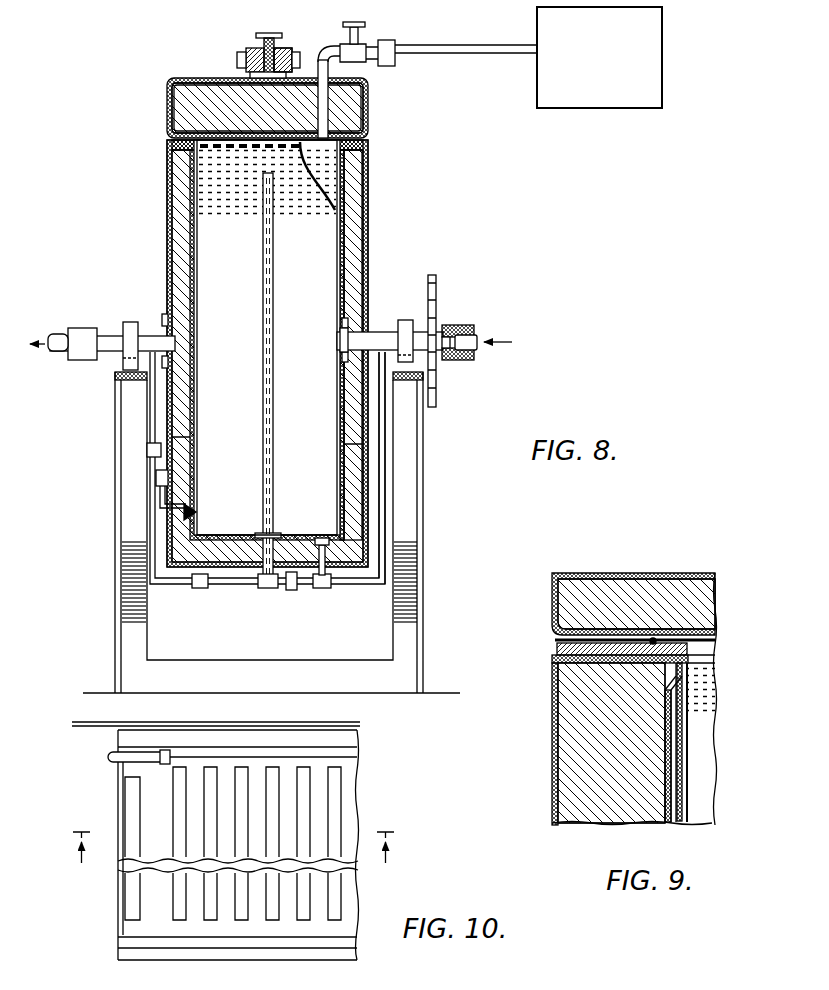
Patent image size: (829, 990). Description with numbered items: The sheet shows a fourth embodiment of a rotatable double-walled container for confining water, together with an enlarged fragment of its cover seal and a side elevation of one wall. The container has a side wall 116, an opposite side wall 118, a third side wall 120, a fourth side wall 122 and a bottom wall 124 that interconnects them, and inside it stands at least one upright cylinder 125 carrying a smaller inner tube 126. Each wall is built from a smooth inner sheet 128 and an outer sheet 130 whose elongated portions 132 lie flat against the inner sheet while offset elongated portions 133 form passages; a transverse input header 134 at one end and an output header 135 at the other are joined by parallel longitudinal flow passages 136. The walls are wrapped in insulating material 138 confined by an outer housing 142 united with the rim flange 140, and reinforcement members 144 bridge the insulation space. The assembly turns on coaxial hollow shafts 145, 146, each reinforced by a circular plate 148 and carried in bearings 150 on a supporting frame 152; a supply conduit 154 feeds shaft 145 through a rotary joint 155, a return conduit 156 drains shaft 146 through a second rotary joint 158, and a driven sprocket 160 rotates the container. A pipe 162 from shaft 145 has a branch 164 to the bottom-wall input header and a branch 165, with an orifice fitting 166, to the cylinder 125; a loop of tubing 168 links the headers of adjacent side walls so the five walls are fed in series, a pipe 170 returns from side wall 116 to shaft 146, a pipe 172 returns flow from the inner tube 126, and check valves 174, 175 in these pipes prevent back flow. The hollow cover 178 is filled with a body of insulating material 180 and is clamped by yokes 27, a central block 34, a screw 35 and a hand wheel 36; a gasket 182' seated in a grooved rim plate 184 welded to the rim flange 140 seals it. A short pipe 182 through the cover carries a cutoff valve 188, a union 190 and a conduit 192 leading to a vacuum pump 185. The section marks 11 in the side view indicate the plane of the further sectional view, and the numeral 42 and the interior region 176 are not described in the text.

In FIG. 8, the yokes 27 is at (250, 47).
In FIG. 8, the central block 34 is at (279, 49).
In FIG. 8, the screw 35 is at (237, 57).
In FIG. 8, the hand wheel 36 is at (268, 33).
In FIG. 8, the evacuation tube 42 is at (301, 61).
In FIG. 8, the side wall 116 is at (190, 224).
In FIG. 9, the side wall 116 is at (662, 805).
In FIG. 10, the side wall 116 is at (118, 823).
In FIG. 8, the opposite side wall 118 is at (346, 207).
In FIG. 8, the third side wall 120 is at (350, 190).
In FIG. 10, the fourth side wall 122 is at (350, 765).
In FIG. 8, the bottom wall 124 is at (233, 532).
In FIG. 8, the upright cylinder 125 is at (274, 300).
In FIG. 8, the inner tube 126 is at (274, 275).
In FIG. 8, the inner sheet 128 is at (193, 298).
In FIG. 9, the inner sheet 128 is at (688, 777).
In FIG. 9, the outer sheet 130 is at (677, 740).
In FIG. 10, the elongated portions 132 is at (337, 792).
In FIG. 10, the offset elongated portions 133 is at (323, 820).
In FIG. 8, the input header 134 is at (193, 170).
In FIG. 9, the input header 134 is at (688, 717).
In FIG. 10, the input header 134 is at (262, 757).
In FIG. 8, the output header 135 is at (190, 510).
In FIG. 8, the longitudinal flow passages 136 is at (194, 330).
In FIG. 9, the longitudinal flow passages 136 is at (677, 802).
In FIG. 8, the insulating material 138 is at (183, 199).
In FIG. 9, the insulating material 138 is at (570, 760).
In FIG. 8, the rim flange 140 is at (360, 152).
In FIG. 9, the rim flange 140 is at (558, 658).
In FIG. 10, the rim flange 140 is at (102, 722).
In FIG. 8, the outer housing 142 is at (365, 235).
In FIG. 9, the outer housing 142 is at (553, 722).
In FIG. 8, the reinforcement members 144 is at (181, 437).
In FIG. 8, the hollow shaft 145 is at (350, 330).
In FIG. 8, the hollow shaft 146 is at (175, 345).
In FIG. 8, the circular plate 148 is at (163, 315).
In FIG. 8, the bearings 150 is at (128, 322).
In FIG. 8, the supporting frame 152 is at (425, 440).
In FIG. 8, the supply conduit 154 is at (472, 335).
In FIG. 8, the rotary joint 155 is at (458, 326).
In FIG. 8, the return conduit 156 is at (60, 335).
In FIG. 8, the second rotary joint 158 is at (83, 348).
In FIG. 8, the driven sprocket 160 is at (436, 290).
In FIG. 8, the pipe 162 is at (385, 497).
In FIG. 8, the branch 164 is at (350, 558).
In FIG. 8, the branch 165 is at (272, 588).
In FIG. 8, the orifice fitting 166 is at (293, 586).
In FIG. 10, the loop of tubing 168 is at (108, 757).
In FIG. 8, the pipe 170 is at (157, 470).
In FIG. 8, the pipe 172 is at (242, 588).
In FIG. 8, the check valve 174 is at (160, 484).
In FIG. 8, the check valve 175 is at (199, 588).
In FIG. 8, the chamber 176 is at (222, 242).
In FIG. 8, the cover 178 is at (171, 77).
In FIG. 9, the cover 178 is at (552, 598).
In FIG. 8, the body of insulating material 180 is at (180, 105).
In FIG. 9, the body of insulating material 180 is at (715, 587).
In FIG. 8, the short pipe 182 is at (304, 108).
In FIG. 9, the gasket 182' is at (663, 623).
In FIG. 9, the rim plate 184 is at (558, 647).
In FIG. 8, the vacuum pump 185 is at (662, 50).
In FIG. 8, the cutoff valve 188 is at (359, 38).
In FIG. 8, the union 190 is at (398, 58).
In FIG. 8, the conduit 192 is at (512, 50).
In FIG. 10, the section line 11 is at (233, 863).